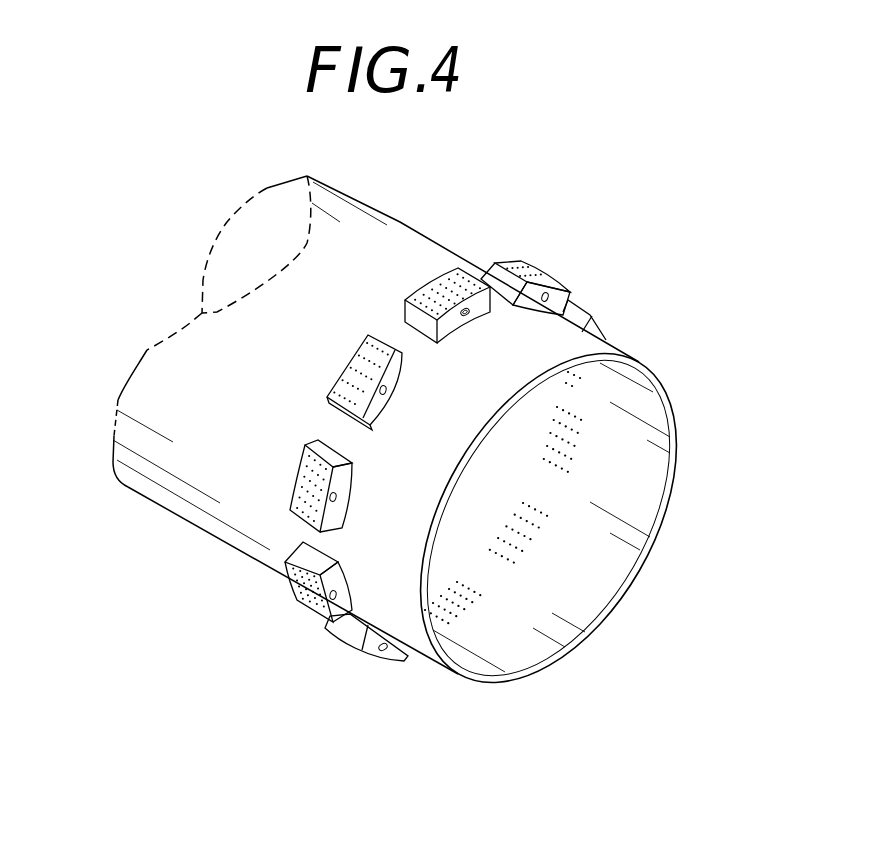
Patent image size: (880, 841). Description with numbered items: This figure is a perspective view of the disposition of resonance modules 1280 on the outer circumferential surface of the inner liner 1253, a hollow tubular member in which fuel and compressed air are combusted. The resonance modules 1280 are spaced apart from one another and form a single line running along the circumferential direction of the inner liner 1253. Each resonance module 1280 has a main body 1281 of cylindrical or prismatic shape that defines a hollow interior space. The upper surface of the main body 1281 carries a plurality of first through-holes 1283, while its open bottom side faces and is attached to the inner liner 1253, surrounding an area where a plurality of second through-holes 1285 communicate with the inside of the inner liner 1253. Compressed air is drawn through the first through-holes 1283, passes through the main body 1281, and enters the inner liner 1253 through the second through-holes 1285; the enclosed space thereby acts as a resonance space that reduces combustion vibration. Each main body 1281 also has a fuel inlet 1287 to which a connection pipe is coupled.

The inner liner 1253 is at (213, 374).
The resonance module 1280 is at (428, 258).
The main body 1281 is at (474, 277).
The first through-holes 1283 is at (587, 284).
The second through-holes 1285 is at (573, 448).
The fuel inlet 1287 is at (582, 311).